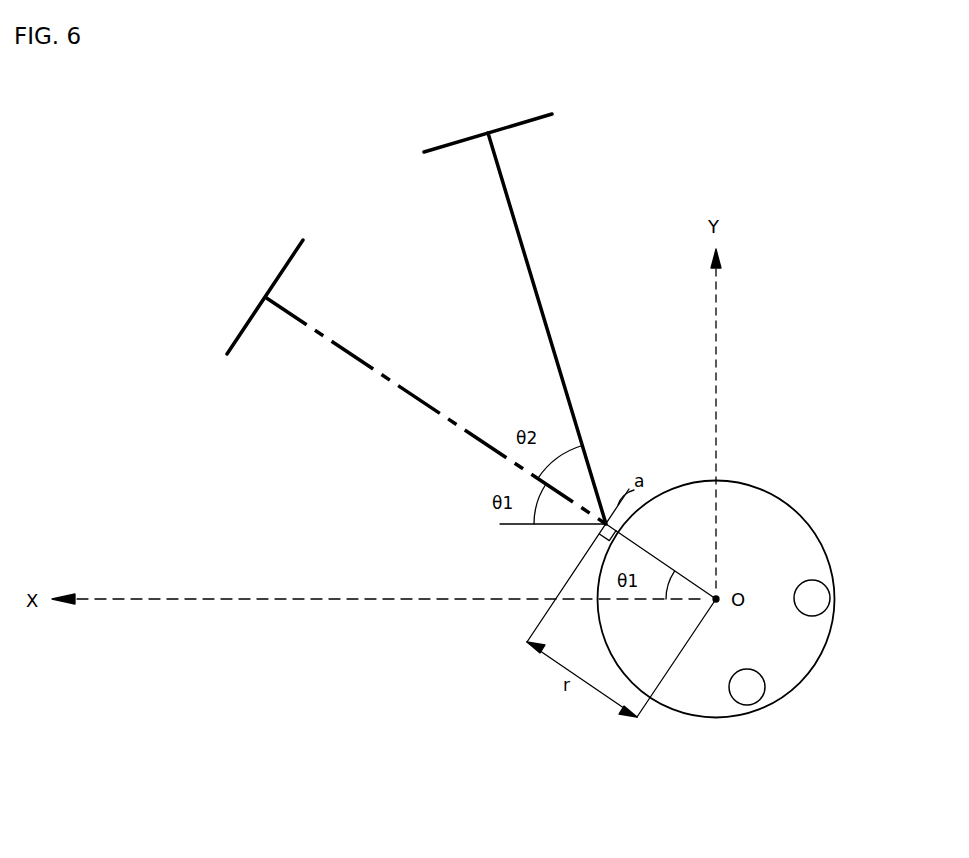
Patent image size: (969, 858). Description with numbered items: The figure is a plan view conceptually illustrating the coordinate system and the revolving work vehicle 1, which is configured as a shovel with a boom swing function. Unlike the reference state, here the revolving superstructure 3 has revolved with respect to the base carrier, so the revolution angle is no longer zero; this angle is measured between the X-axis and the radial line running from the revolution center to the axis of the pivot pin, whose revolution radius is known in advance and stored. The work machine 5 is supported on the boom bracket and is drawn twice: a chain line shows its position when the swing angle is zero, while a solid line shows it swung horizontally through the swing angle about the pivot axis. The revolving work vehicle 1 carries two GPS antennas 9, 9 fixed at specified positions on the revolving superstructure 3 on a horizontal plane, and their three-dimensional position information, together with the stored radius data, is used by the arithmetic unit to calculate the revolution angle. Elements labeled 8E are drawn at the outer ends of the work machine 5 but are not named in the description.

The revolving work vehicle 1 is at (773, 396).
The revolving superstructure 3 is at (782, 503).
The work machine 5 is at (547, 320).
The end effector 8E is at (486, 132).
The GPS antenna 9 is at (825, 584).